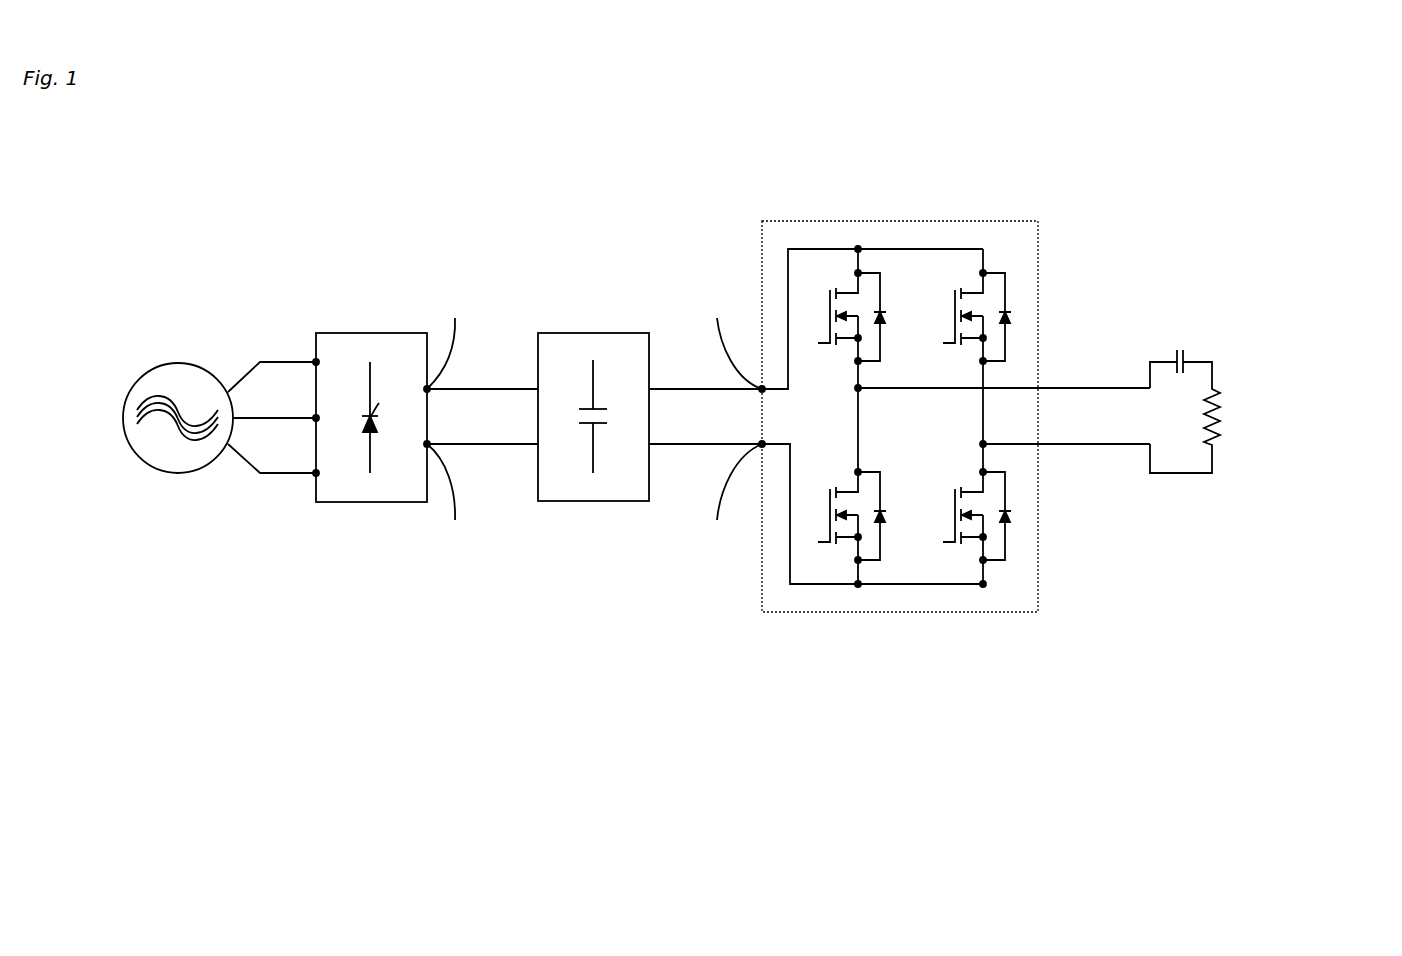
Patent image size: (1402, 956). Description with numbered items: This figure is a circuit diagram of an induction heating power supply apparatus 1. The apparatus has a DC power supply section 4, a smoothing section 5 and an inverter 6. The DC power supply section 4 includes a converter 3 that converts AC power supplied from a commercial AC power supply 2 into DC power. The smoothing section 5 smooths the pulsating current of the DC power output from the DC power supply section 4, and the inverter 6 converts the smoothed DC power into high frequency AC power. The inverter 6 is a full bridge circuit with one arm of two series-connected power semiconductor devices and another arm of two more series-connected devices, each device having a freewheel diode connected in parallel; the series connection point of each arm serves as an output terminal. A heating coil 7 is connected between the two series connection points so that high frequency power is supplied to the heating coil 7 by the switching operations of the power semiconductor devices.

The induction heating power supply apparatus 1 is at (736, 377).
The commercial AC power supply 2 is at (215, 452).
The converter 3 is at (370, 449).
The DC power supply section 4 is at (455, 573).
The smoothing section 5 is at (599, 453).
The inverter 6 is at (954, 449).
The heating coil 7 is at (1222, 416).